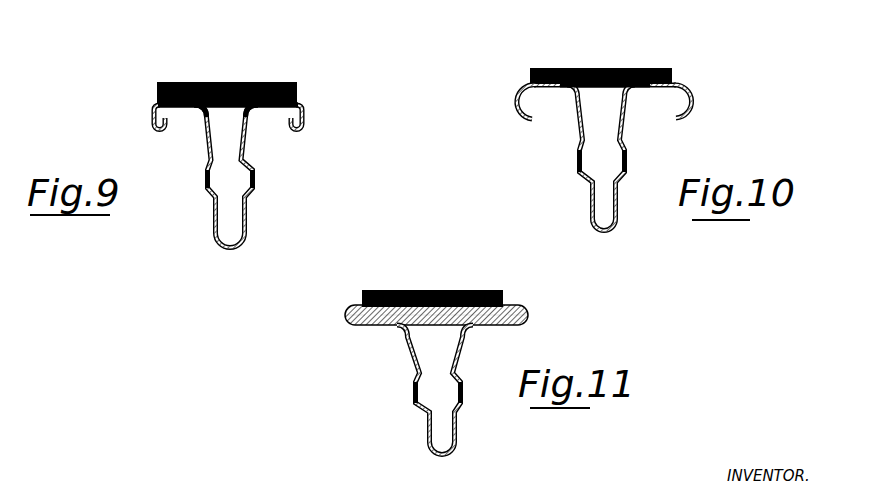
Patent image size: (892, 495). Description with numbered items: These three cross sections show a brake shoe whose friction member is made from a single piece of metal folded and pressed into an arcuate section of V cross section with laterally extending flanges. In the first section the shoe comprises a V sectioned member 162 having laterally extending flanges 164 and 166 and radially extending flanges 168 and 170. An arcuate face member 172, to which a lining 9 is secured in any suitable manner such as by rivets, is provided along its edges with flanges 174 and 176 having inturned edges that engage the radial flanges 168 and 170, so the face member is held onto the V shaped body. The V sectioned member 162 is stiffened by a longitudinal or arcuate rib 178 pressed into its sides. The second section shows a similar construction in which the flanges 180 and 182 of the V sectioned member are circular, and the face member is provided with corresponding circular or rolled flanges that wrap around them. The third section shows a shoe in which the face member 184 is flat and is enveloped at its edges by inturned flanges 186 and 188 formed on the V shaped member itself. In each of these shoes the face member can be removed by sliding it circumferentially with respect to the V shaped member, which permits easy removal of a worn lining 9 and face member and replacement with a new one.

In FIG. 9, the lining 9 is at (260, 82).
In FIG. 10, the lining 9 is at (651, 68).
In FIG. 11, the lining 9 is at (468, 291).
In FIG. 9, the V sectioned member 162 is at (247, 218).
In FIG. 10, the V sectioned member 162 is at (616, 208).
In FIG. 11, the V sectioned member 162 is at (428, 433).
In FIG. 9, the laterally extending flange 164 is at (185, 112).
In FIG. 9, the laterally extending flange 166 is at (269, 113).
In FIG. 9, the radially extending flange 168 is at (152, 118).
In FIG. 9, the radially extending flange 170 is at (304, 117).
In FIG. 9, the arcuate face member 172 is at (219, 82).
In FIG. 10, the arcuate face member 172 is at (597, 70).
In FIG. 9, the flange 174 is at (152, 107).
In FIG. 9, the flange 176 is at (304, 101).
In FIG. 9, the rib 178 is at (253, 188).
In FIG. 10, the rib 178 is at (623, 157).
In FIG. 11, the rib 178 is at (417, 397).
In FIG. 10, the circular flange 180 is at (514, 116).
In FIG. 10, the circular flange 182 is at (694, 100).
In FIG. 11, the face member 184 is at (418, 293).
In FIG. 11, the inturned flange 186 is at (345, 317).
In FIG. 11, the inturned flange 188 is at (530, 311).